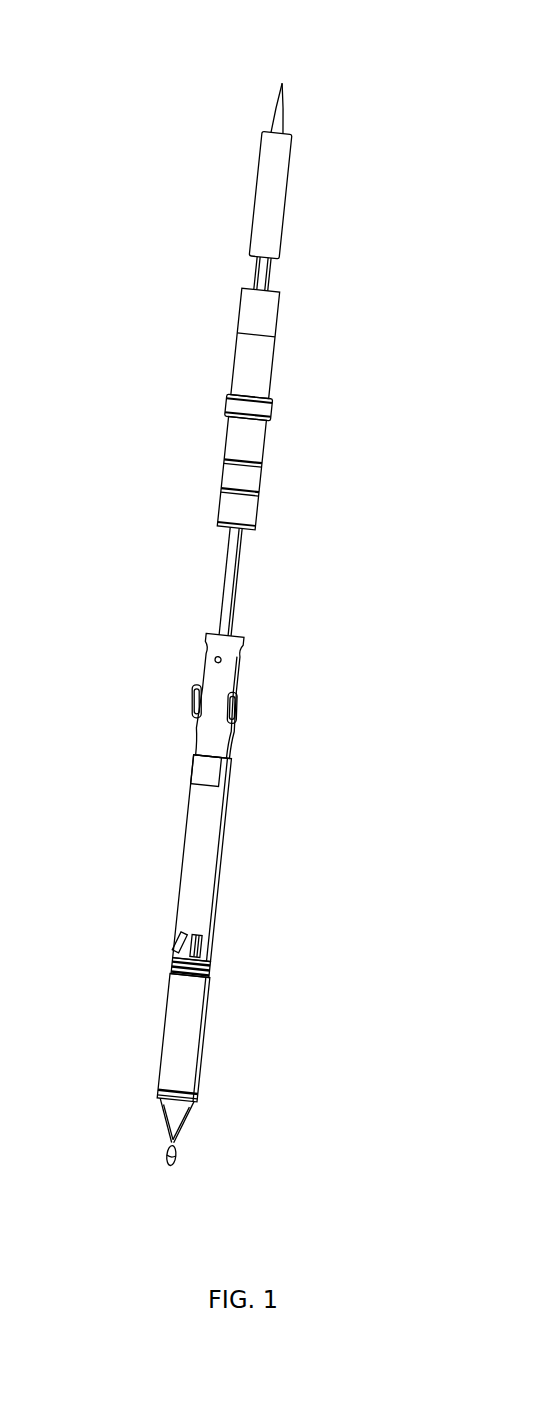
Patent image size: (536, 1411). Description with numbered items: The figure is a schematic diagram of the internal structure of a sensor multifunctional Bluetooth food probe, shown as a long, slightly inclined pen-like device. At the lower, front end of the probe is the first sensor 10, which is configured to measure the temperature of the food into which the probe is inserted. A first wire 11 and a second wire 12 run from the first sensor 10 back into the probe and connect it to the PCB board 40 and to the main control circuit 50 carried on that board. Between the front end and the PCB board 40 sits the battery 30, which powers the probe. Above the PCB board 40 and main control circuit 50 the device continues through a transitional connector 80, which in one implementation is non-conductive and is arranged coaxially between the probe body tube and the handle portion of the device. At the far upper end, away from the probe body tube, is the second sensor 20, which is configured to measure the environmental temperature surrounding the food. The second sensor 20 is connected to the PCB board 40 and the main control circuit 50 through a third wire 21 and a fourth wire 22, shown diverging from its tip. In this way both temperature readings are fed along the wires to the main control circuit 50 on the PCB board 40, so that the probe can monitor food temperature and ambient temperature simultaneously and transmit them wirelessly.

The first sensor 10 is at (178, 1163).
The first wire 11 is at (158, 1123).
The second wire 12 is at (193, 1123).
The second sensor 20 is at (282, 96).
The third wire 21 is at (278, 100).
The fourth wire 22 is at (288, 100).
The battery 30 is at (187, 1038).
The PCB board 40 is at (215, 810).
The main control circuit 50 is at (199, 770).
The transitional connector 80 is at (272, 408).